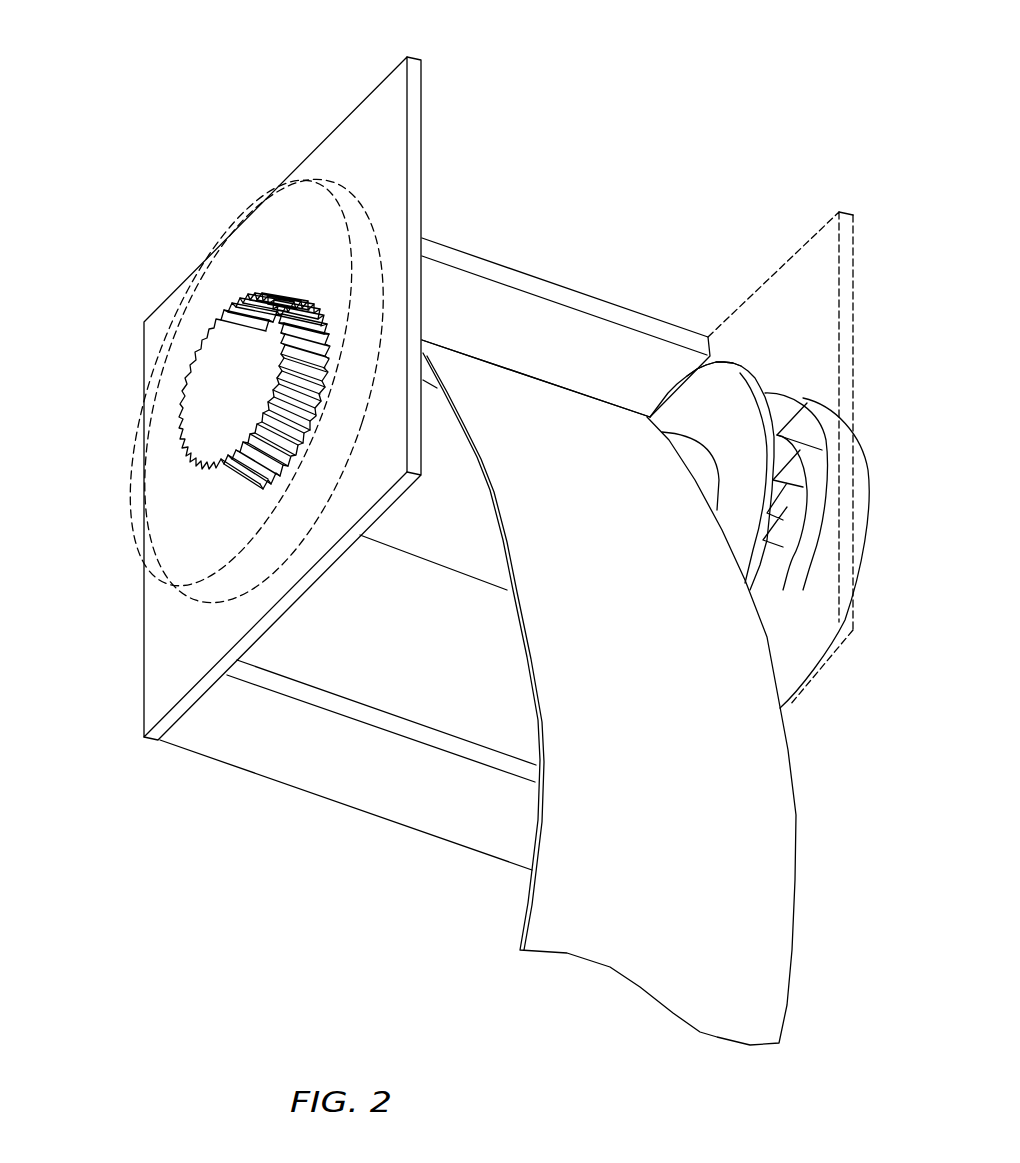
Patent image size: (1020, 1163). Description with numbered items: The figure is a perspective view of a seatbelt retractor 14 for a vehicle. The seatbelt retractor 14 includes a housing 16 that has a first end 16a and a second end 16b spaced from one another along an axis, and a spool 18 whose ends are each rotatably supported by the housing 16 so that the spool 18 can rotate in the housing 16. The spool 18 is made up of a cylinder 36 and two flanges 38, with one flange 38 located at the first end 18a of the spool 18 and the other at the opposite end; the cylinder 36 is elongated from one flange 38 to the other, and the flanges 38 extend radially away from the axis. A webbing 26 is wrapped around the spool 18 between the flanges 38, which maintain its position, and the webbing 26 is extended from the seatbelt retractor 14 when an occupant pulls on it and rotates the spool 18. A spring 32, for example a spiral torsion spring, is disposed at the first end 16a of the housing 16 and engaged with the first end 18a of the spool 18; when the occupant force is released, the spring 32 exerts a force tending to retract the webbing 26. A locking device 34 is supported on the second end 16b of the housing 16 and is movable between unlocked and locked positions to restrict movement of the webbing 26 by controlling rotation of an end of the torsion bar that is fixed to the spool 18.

The seatbelt retractor 14 is at (310, 65).
The housing 16 is at (478, 254).
The first end of the housing 16a is at (860, 242).
The second end of the housing 16b is at (144, 690).
The spool 18 is at (515, 350).
The first end of the spool 18a is at (710, 402).
The webbing 26 is at (795, 818).
The spring 32 is at (868, 470).
The locking device 34 is at (170, 310).
The cylinder 36 is at (700, 458).
The flange 38 is at (747, 372).